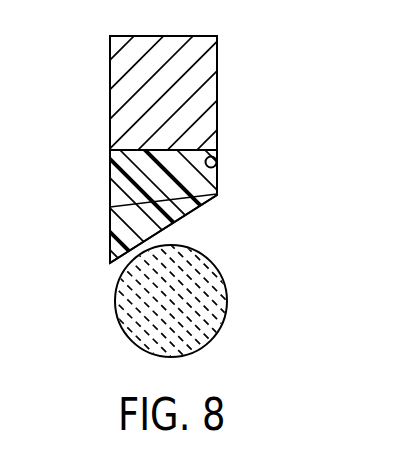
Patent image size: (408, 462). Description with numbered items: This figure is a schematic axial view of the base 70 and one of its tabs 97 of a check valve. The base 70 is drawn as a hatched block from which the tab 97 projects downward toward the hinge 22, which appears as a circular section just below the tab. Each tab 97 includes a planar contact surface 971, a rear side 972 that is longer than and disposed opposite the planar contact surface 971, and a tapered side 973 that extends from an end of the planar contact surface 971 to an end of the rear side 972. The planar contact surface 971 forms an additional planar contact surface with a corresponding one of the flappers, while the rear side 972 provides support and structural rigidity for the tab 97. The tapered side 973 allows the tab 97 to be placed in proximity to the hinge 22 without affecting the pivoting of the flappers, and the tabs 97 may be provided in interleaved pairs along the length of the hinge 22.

The base 70 is at (115, 103).
The tab 97 is at (118, 190).
The planar contact surface 971 is at (218, 160).
The rear side 972 is at (217, 194).
The tapered side 973 is at (178, 222).
The hinge 22 is at (130, 303).